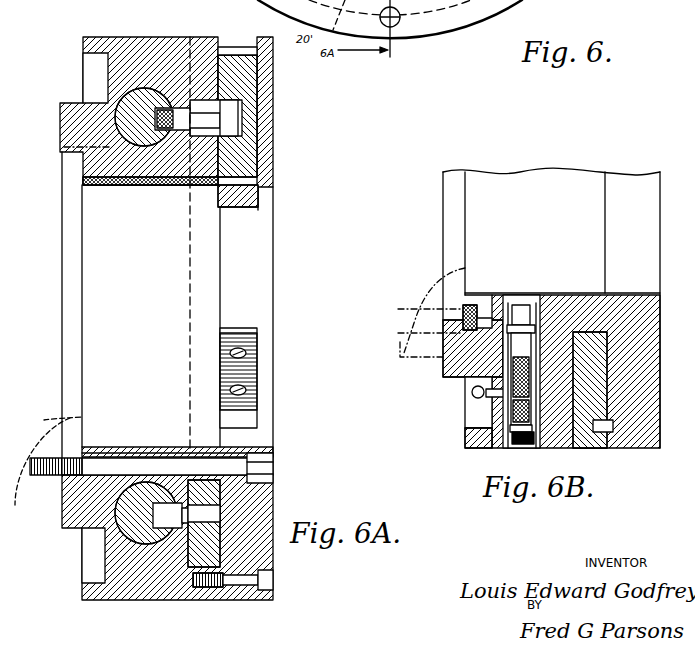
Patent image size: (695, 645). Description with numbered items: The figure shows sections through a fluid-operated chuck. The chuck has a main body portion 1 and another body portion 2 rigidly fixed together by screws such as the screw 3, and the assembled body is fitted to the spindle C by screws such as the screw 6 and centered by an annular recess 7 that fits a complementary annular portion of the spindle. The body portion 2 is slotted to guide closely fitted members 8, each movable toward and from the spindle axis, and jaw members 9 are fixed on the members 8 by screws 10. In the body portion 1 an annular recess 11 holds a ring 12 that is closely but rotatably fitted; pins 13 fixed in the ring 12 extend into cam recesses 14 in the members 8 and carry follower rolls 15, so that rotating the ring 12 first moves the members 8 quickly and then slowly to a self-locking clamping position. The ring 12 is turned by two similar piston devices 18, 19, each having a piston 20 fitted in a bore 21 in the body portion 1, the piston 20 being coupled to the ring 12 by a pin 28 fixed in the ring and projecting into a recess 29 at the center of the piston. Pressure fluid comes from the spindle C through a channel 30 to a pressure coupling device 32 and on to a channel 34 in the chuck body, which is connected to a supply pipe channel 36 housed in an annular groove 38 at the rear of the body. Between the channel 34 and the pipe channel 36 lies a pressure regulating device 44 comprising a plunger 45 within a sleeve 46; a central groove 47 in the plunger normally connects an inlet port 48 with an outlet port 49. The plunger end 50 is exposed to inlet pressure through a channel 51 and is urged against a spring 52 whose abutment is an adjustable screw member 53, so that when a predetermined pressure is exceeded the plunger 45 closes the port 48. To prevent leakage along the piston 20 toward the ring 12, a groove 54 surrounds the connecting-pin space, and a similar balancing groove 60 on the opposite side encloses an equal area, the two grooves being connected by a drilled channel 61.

In FIG. 6A, the main body portion 1 is at (135, 37).
In FIG. 6B, the main body portion 1 is at (562, 193).
In FIG. 6, the body portion 2 is at (516, 0).
In FIG. 6A, the body portion 2 is at (268, 140).
In FIG. 6B, the body portion 2 is at (620, 193).
In FIG. 6, the screw 3 is at (397, 24).
In FIG. 6A, the screw 3 is at (268, 589).
In FIG. 6A, the screw 6 is at (268, 474).
In FIG. 6A, the annular recess 7 is at (62, 478).
In FIG. 6B, the annular recess 7 is at (445, 333).
In FIG. 6A, the member 8 is at (263, 160).
In FIG. 6A, the jaw member 9 is at (248, 375).
In FIG. 6A, the screw 10 is at (257, 358).
In FIG. 6A, the annular recess 11 is at (187, 72).
In FIG. 6B, the annular recess 11 is at (600, 427).
In FIG. 6A, the ring 12 is at (205, 65).
In FIG. 6B, the ring 12 is at (589, 345).
In FIG. 6A, the pin 13 is at (193, 133).
In FIG. 6A, the cam recess 14 is at (246, 108).
In FIG. 6A, the follower roll 15 is at (235, 100).
In FIG. 6A, the piston device 18 is at (118, 96).
In FIG. 6, the piston device 19 is at (300, 0).
In FIG. 6A, the piston device 19 is at (106, 530).
In FIG. 6A, the piston 20 is at (142, 88).
In FIG. 6A, the bore 21 is at (150, 504).
In FIG. 6A, the pin 28 is at (207, 588).
In FIG. 6A, the recess 29 is at (160, 135).
In FIG. 6B, the channel 30 is at (460, 317).
In FIG. 6B, the pressure coupling device 32 is at (470, 308).
In FIG. 6B, the channel 34 is at (490, 313).
In FIG. 6B, the supply pipe channel 36 is at (470, 405).
In FIG. 6A, the annular groove 38 is at (93, 568).
In FIG. 6B, the annular groove 38 is at (472, 425).
In FIG. 6B, the pressure regulating device 44 is at (447, 448).
In FIG. 6B, the plunger 45 is at (530, 405).
In FIG. 6B, the sleeve 46 is at (525, 447).
In FIG. 6B, the central groove 47 is at (488, 397).
In FIG. 6B, the inlet port 48 is at (472, 390).
In FIG. 6B, the outlet port 49 is at (492, 402).
In FIG. 6B, the plunger end 50 is at (513, 330).
In FIG. 6B, the channel 51 is at (533, 325).
In FIG. 6B, the spring 52 is at (474, 458).
In FIG. 6B, the adjustable screw member 53 is at (510, 445).
In FIG. 6A, the groove 54 is at (183, 503).
In FIG. 6A, the groove 60 is at (63, 125).
In FIG. 6A, the drilled channel 61 is at (64, 147).
In FIG. 6A, the spindle C is at (49, 453).
In FIG. 6B, the spindle C is at (408, 342).